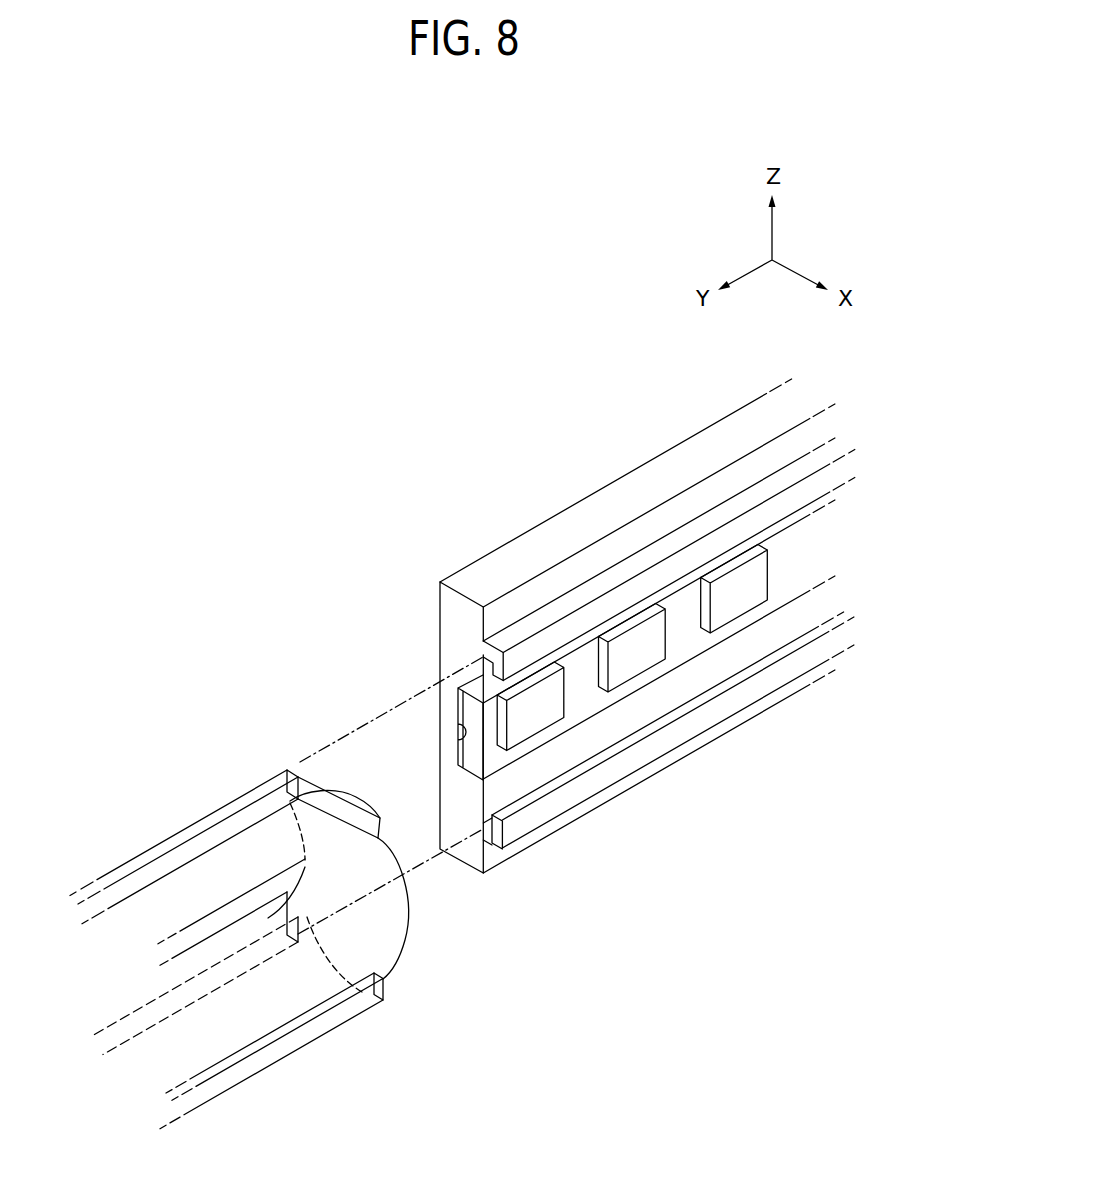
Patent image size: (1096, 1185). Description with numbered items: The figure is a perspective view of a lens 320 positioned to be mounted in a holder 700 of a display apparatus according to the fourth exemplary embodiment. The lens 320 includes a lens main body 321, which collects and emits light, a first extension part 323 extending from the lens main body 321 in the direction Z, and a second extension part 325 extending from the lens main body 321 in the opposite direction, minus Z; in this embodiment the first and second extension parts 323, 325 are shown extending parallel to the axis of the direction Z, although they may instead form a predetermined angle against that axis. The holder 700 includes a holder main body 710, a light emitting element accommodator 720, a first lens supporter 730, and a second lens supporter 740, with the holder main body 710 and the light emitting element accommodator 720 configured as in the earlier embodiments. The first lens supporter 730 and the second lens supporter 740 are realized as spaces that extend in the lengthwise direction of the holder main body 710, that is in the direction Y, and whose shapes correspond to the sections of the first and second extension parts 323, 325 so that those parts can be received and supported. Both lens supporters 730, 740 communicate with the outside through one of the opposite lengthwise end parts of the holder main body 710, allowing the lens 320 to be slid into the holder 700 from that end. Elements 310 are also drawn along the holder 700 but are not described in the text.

The holder 700 is at (500, 470).
The holder main body 710 is at (438, 596).
The first lens supporter 730 is at (482, 657).
The light emitting element accommodator 720 is at (457, 747).
The second lens supporter 740 is at (497, 850).
The mounted blocks 310 is at (645, 670).
The lens 320 is at (133, 844).
The first extension part 323 is at (296, 790).
The second extension part 325 is at (275, 912).
The lens main body 321 is at (270, 1007).